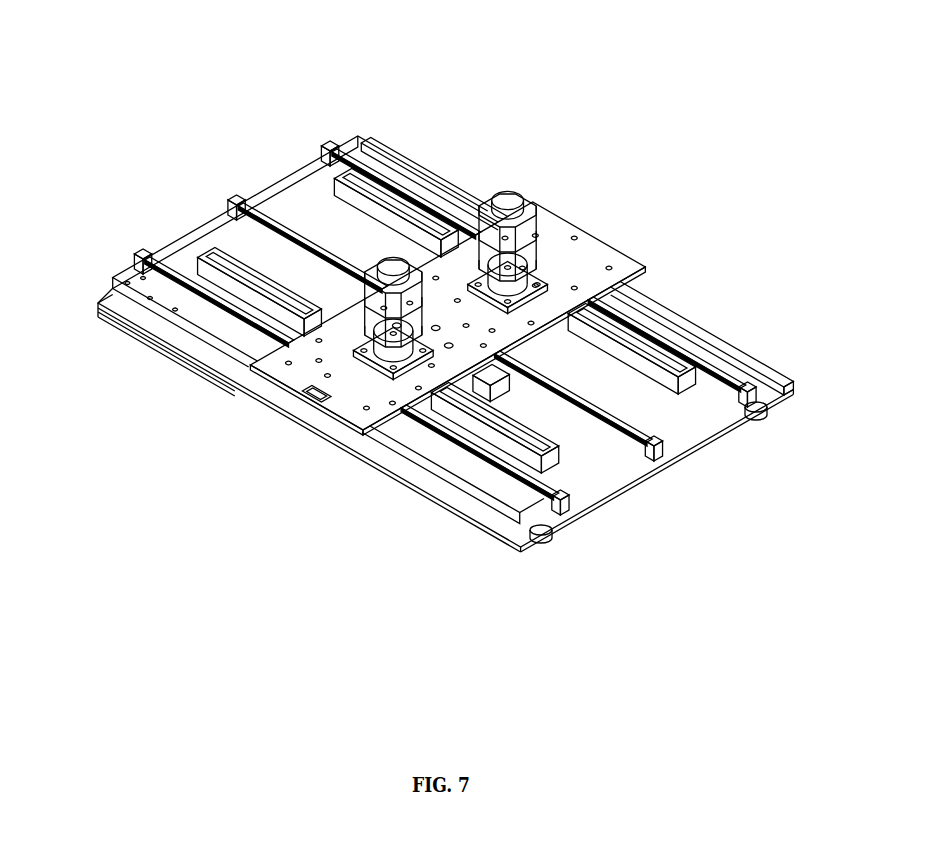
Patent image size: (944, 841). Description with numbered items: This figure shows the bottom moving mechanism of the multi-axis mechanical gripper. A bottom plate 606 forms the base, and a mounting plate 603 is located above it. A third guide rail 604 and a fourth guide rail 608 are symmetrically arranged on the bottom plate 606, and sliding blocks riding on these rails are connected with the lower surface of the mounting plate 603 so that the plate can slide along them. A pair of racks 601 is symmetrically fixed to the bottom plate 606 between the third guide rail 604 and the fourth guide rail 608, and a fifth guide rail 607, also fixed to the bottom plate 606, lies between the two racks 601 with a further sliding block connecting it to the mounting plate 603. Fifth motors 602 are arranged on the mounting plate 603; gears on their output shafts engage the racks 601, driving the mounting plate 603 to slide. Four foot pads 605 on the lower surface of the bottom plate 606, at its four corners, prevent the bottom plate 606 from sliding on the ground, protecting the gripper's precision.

The rack 601 is at (372, 183).
The fifth motor 602 is at (520, 181).
The mounting plate 603 is at (576, 254).
The third guide rail 604 is at (675, 331).
The foot pad 605 is at (764, 426).
The bottom plate 606 is at (696, 418).
The fifth guide rail 607 is at (581, 420).
The fourth guide rail 608 is at (171, 295).